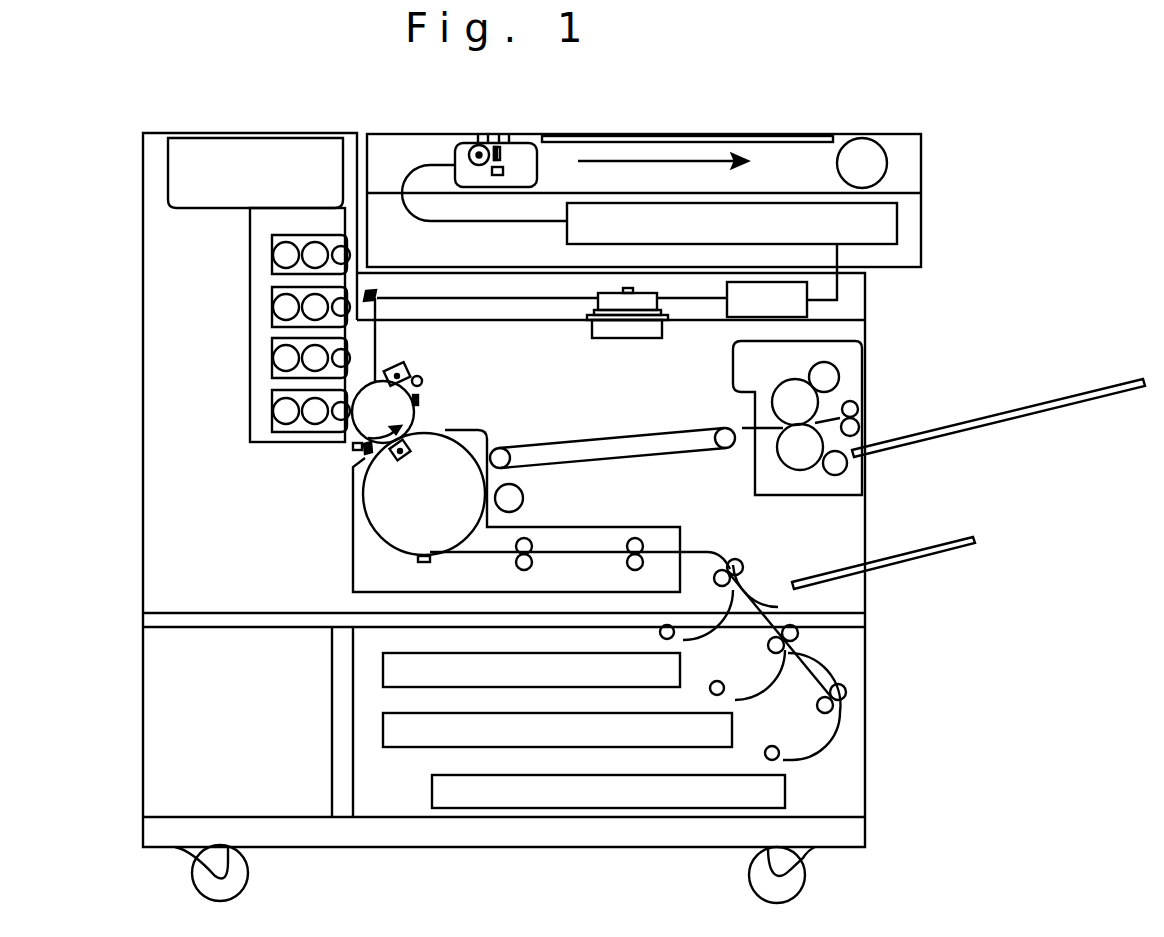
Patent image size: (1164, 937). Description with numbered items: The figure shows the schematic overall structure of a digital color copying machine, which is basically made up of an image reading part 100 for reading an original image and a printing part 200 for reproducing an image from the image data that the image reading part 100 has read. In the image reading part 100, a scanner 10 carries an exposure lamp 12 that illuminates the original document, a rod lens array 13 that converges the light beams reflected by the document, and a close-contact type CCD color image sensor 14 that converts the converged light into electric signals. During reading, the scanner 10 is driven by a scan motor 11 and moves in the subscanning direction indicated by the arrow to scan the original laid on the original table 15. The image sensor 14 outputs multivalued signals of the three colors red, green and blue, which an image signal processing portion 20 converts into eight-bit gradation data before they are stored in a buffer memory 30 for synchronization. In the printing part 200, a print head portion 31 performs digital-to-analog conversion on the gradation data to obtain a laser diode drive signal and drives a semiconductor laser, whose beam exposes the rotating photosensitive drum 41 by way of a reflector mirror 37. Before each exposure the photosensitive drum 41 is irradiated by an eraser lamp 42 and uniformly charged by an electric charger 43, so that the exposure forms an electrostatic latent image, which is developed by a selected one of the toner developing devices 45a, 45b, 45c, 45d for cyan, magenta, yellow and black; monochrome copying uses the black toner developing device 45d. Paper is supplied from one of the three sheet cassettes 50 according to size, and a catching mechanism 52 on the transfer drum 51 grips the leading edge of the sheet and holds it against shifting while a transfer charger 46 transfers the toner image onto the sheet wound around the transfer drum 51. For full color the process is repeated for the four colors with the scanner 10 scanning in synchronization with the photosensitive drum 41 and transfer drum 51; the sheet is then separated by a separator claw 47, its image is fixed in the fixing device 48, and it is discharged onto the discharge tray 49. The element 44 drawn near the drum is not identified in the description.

The image reading part 100 is at (930, 157).
The printing part 200 is at (136, 375).
The scanner 10 is at (548, 154).
The scan motor 11 is at (877, 146).
The exposure lamp 12 is at (473, 147).
The rod lens array 13 is at (501, 147).
The CCD color image sensor 14 is at (497, 175).
The original table 15 is at (698, 135).
The image signal processing portion 20 is at (888, 225).
The buffer memory 30 is at (807, 307).
The print head portion 31 is at (642, 340).
The reflector mirror 37 is at (378, 296).
The photosensitive drum 41 is at (395, 427).
The eraser lamp 42 is at (423, 381).
The electric charger 43 is at (408, 371).
The cleaning blade 44 is at (420, 400).
The toner developing device 45a is at (272, 258).
The toner developing device 45b is at (272, 308).
The toner developing device 45c is at (272, 357).
The toner developing device of black 45d is at (272, 412).
The transfer charger 46 is at (402, 459).
The separator claw 47 is at (490, 446).
The fixing device 48 is at (856, 385).
The discharge tray 49 is at (1026, 404).
The sheet cassettes 50 is at (432, 795).
The transfer drum 51 is at (380, 538).
The catching mechanism 52 is at (431, 561).